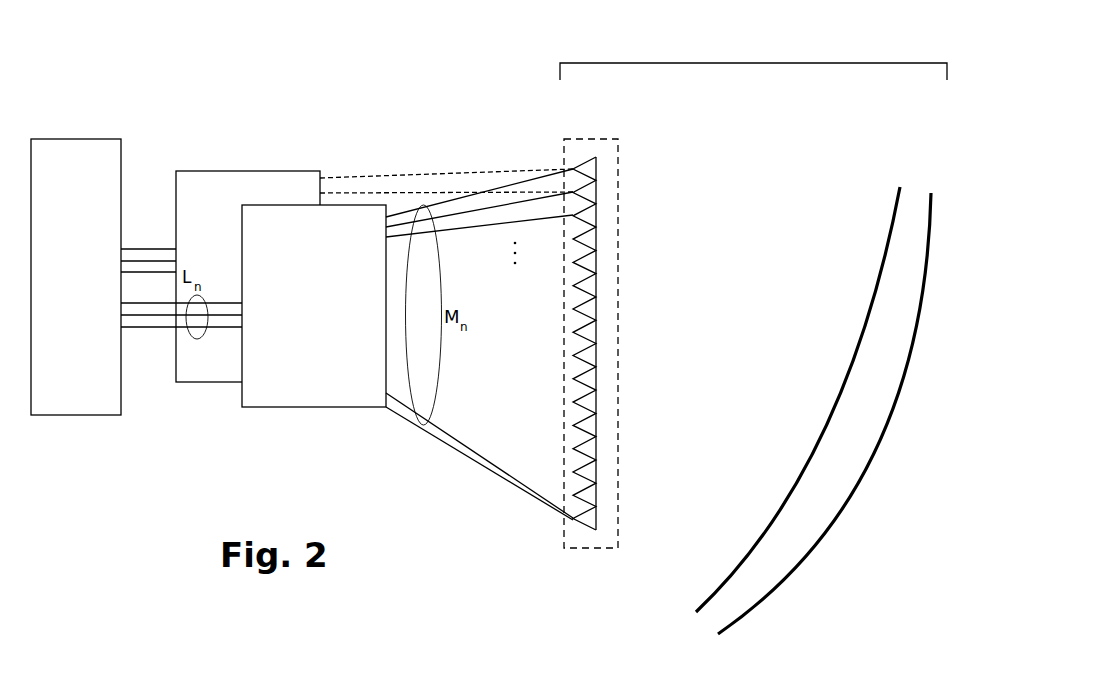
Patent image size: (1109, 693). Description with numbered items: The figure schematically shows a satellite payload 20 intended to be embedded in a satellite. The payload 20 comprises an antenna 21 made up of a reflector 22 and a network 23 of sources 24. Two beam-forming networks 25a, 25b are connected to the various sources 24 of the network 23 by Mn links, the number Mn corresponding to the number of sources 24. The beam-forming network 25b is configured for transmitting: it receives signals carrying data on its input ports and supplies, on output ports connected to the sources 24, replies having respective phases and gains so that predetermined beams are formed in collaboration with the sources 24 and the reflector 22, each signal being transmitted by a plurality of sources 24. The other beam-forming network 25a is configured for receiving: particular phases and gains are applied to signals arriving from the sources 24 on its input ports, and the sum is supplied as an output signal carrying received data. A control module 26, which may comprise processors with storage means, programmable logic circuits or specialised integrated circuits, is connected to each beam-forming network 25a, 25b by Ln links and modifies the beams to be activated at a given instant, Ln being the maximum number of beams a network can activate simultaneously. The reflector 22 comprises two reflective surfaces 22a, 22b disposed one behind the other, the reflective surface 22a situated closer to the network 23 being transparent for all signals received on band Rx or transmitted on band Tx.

The payload 20 is at (432, 99).
The antenna 21 is at (752, 63).
The reflector 22 is at (813, 364).
The reflective surface 22a is at (774, 500).
The reflective surface 22b is at (862, 489).
The network of sources 23 is at (601, 145).
The sources 24 is at (598, 312).
The beam-forming network 25a is at (277, 406).
The beam-forming network 25b is at (259, 179).
The control module 26 is at (81, 147).